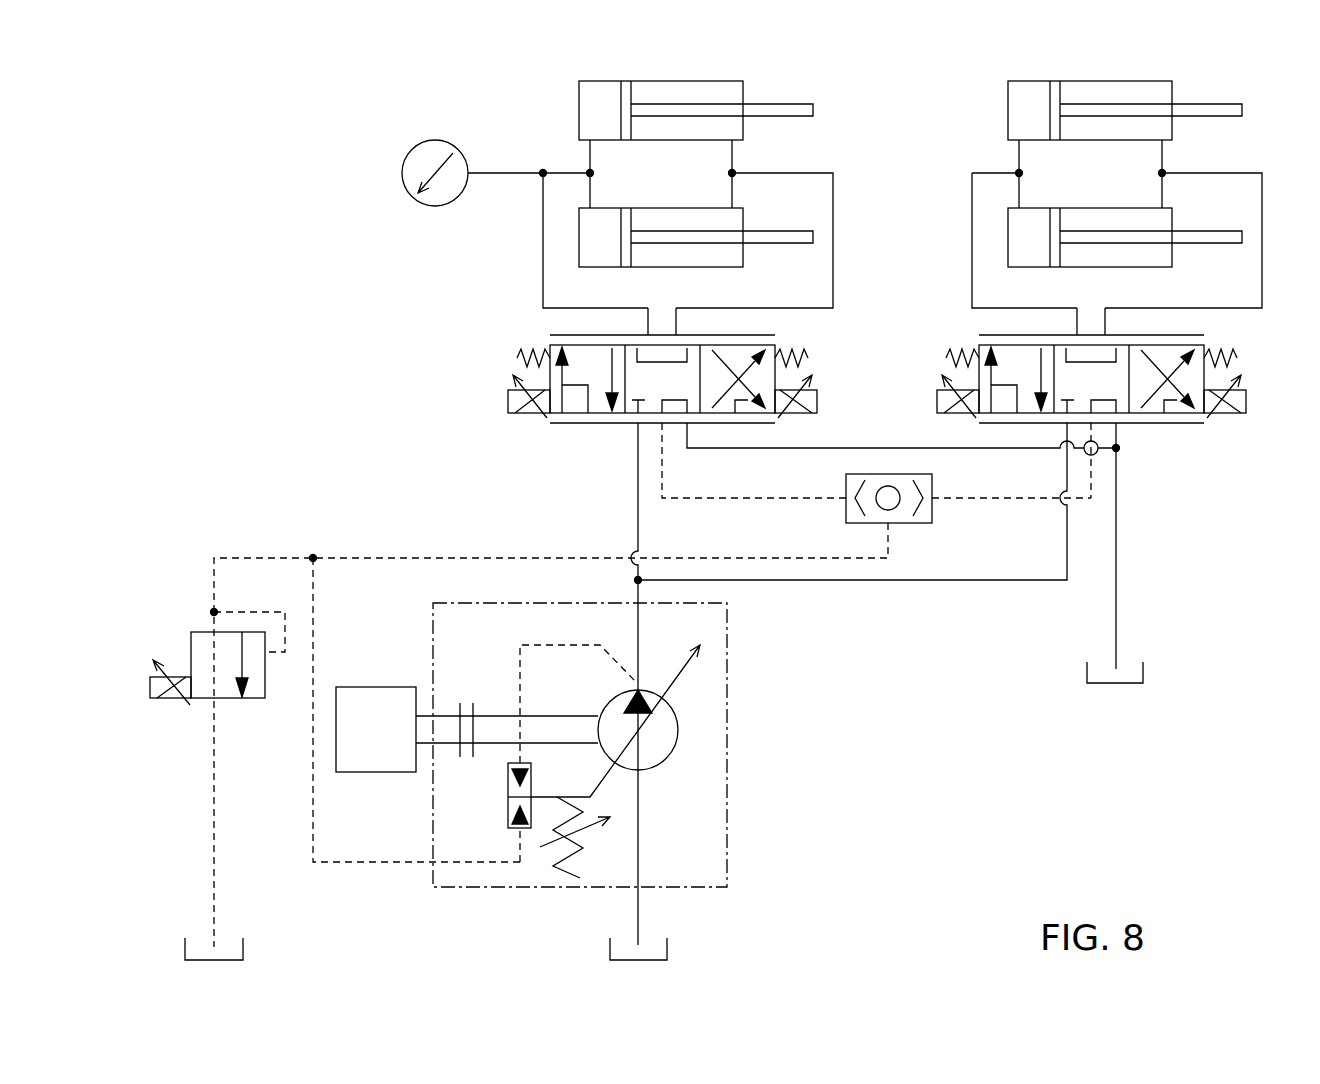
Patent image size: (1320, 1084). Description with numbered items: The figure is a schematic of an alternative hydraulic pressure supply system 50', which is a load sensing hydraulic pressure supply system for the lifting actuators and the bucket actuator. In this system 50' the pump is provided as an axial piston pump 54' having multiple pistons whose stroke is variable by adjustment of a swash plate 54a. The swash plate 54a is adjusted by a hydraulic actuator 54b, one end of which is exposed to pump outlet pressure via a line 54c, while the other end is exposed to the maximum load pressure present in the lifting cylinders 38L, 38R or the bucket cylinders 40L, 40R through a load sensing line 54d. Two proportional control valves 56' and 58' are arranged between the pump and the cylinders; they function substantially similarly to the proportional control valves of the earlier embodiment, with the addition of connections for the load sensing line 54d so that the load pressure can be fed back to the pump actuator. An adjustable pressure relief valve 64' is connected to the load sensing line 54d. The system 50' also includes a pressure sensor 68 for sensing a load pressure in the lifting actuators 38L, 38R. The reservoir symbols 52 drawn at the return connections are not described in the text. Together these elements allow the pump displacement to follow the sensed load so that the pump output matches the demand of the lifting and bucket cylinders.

The hydraulic pressure supply system 50' is at (295, 68).
The lifting cylinder 38L is at (579, 118).
The lifting cylinder 38R is at (608, 208).
The bucket cylinder 40L is at (1008, 118).
The bucket cylinder 40R is at (1036, 208).
The pressure sensor 68 is at (422, 207).
The proportional control valve 56' is at (662, 418).
The proportional control valve 58' is at (1091, 420).
The reservoir 52 is at (243, 940).
The axial piston pump 54' is at (575, 745).
The swash plate 54a is at (610, 775).
The hydraulic actuator 54b is at (508, 815).
The line 54c is at (518, 678).
The load sensing line 54d is at (262, 555).
The adjustable pressure relief valve 64' is at (203, 706).